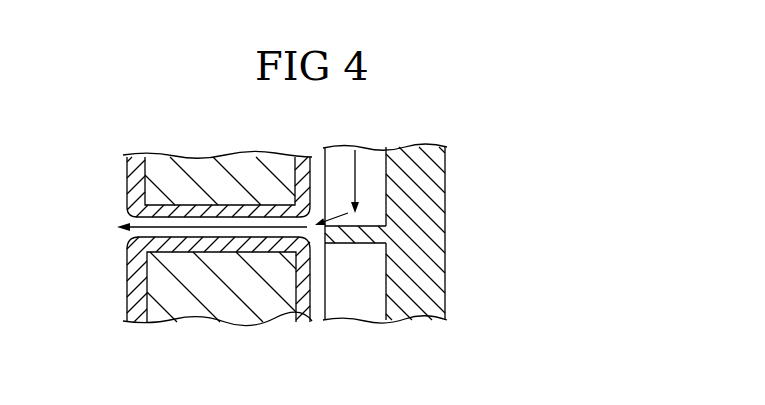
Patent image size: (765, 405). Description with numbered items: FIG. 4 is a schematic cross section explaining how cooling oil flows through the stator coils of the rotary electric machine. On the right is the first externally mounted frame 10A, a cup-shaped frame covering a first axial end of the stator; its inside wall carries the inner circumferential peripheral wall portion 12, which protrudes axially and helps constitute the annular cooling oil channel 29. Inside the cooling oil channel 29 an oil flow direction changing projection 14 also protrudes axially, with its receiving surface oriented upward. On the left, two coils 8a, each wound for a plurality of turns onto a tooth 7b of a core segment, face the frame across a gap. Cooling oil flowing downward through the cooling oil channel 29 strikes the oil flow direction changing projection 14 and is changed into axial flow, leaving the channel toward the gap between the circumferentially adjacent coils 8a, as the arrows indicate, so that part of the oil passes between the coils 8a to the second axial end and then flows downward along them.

The first externally mounted frame 10A is at (447, 173).
The inner circumferential peripheral wall portion 12 is at (363, 298).
The oil flow direction changing projection 14 is at (358, 230).
The cooling oil channel 29 is at (373, 190).
The coil 8a is at (137, 263).
The tooth 7b is at (172, 293).